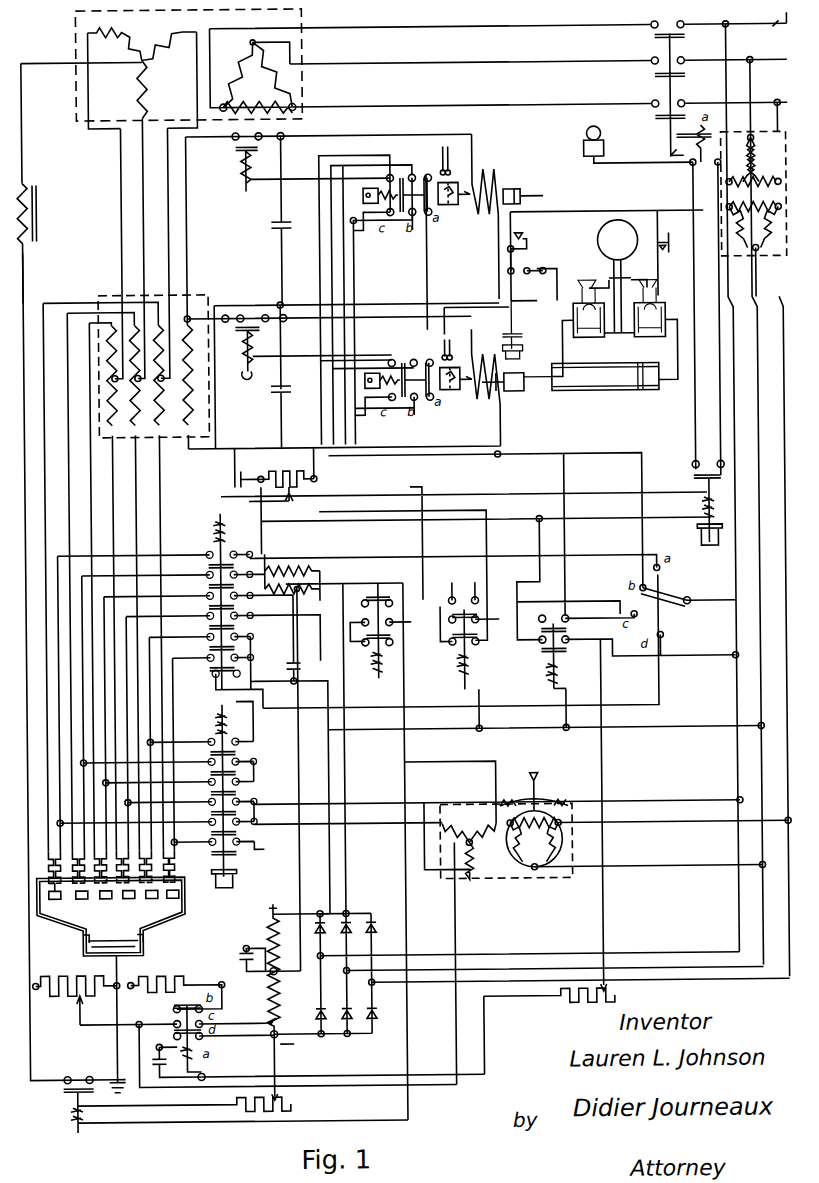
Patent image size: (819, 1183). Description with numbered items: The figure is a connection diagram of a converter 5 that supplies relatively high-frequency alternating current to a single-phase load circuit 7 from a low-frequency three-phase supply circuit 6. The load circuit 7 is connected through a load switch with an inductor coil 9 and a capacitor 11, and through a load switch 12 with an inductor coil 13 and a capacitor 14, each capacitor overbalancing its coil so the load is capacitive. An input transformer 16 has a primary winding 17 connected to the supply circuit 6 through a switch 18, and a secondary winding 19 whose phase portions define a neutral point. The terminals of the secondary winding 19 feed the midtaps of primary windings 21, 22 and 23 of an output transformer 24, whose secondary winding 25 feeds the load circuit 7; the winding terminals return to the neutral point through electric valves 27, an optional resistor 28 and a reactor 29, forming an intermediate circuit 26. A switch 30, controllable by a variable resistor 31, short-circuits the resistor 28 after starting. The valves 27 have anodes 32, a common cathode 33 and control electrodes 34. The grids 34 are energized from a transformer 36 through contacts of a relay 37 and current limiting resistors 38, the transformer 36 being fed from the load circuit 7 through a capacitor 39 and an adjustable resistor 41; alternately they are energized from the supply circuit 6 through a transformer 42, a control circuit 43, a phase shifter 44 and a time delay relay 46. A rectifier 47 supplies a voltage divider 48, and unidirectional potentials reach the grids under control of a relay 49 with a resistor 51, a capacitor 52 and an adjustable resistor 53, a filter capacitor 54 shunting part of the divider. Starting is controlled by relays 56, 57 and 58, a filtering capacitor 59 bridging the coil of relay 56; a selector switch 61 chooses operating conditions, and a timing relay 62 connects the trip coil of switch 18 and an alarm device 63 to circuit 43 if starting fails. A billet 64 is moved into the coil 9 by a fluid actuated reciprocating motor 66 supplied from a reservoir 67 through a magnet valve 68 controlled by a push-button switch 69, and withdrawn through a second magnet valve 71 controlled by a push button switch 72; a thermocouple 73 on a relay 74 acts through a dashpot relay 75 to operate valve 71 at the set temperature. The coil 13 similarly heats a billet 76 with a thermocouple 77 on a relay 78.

The converter 5 is at (64, 548).
The three-phase supply circuit 6 is at (781, 90).
The single-phase load circuit 7 is at (200, 140).
The inductor coil 9 is at (488, 400).
The capacitor 11 is at (275, 393).
The load switch 12 is at (250, 190).
The inductor coil 13 is at (486, 168).
The capacitor 14 is at (276, 232).
The input transformer 16 is at (83, 97).
The primary winding 17 is at (262, 74).
The switch 18 is at (668, 48).
The secondary winding 19 is at (165, 75).
The primary winding 21 is at (114, 433).
The primary winding 22 is at (137, 433).
The primary winding 23 is at (161, 433).
The output transformer 24 is at (110, 292).
The secondary winding 25 is at (187, 435).
The intermediate circuit 26 is at (27, 272).
The electric valves 27 is at (168, 920).
The resistor 28 is at (70, 970).
The reactor 29 is at (40, 210).
The switch 30 is at (62, 1094).
The variable resistor 31 is at (290, 1098).
The anodes 32 is at (98, 887).
The common cathode 33 is at (128, 958).
The control electrodes 34 is at (104, 900).
The transformer 36 is at (320, 584).
The relay 37 is at (212, 515).
The current limiting resistors 38 is at (174, 852).
The capacitor 39 is at (238, 490).
The adjustable resistor 41 is at (292, 468).
The transformer 42 is at (760, 256).
The control circuit 43 is at (708, 982).
The phase shifter 44 is at (510, 882).
The time delay relay 46 is at (228, 866).
The rectifier 47 is at (341, 995).
The voltage divider 48 is at (262, 928).
The relay 49 is at (164, 1066).
The resistor 51 is at (170, 980).
The capacitor 52 is at (140, 1088).
The adjustable resistor 53 is at (622, 994).
The filter capacitor 54 is at (236, 962).
The relay 56 is at (378, 680).
The relay 57 is at (464, 692).
The relay 58 is at (545, 688).
The filtering capacitor 59 is at (284, 678).
The selector switch 61 is at (675, 598).
The timing relay 62 is at (688, 478).
The alarm device 63 is at (588, 150).
The billet 64 is at (514, 392).
The fluid actuated reciprocating motor 66 is at (600, 392).
The reservoir 67 is at (602, 240).
The magnet valve 68 is at (652, 340).
The push-button switch 69 is at (670, 258).
The magnet valve 71 is at (590, 340).
The push button switch 72 is at (530, 235).
The thermocouple 73 is at (458, 392).
The relay 74 is at (450, 392).
The relay 75 is at (500, 338).
The billet 76 is at (515, 188).
The thermocouple 77 is at (456, 207).
The relay 78 is at (452, 205).